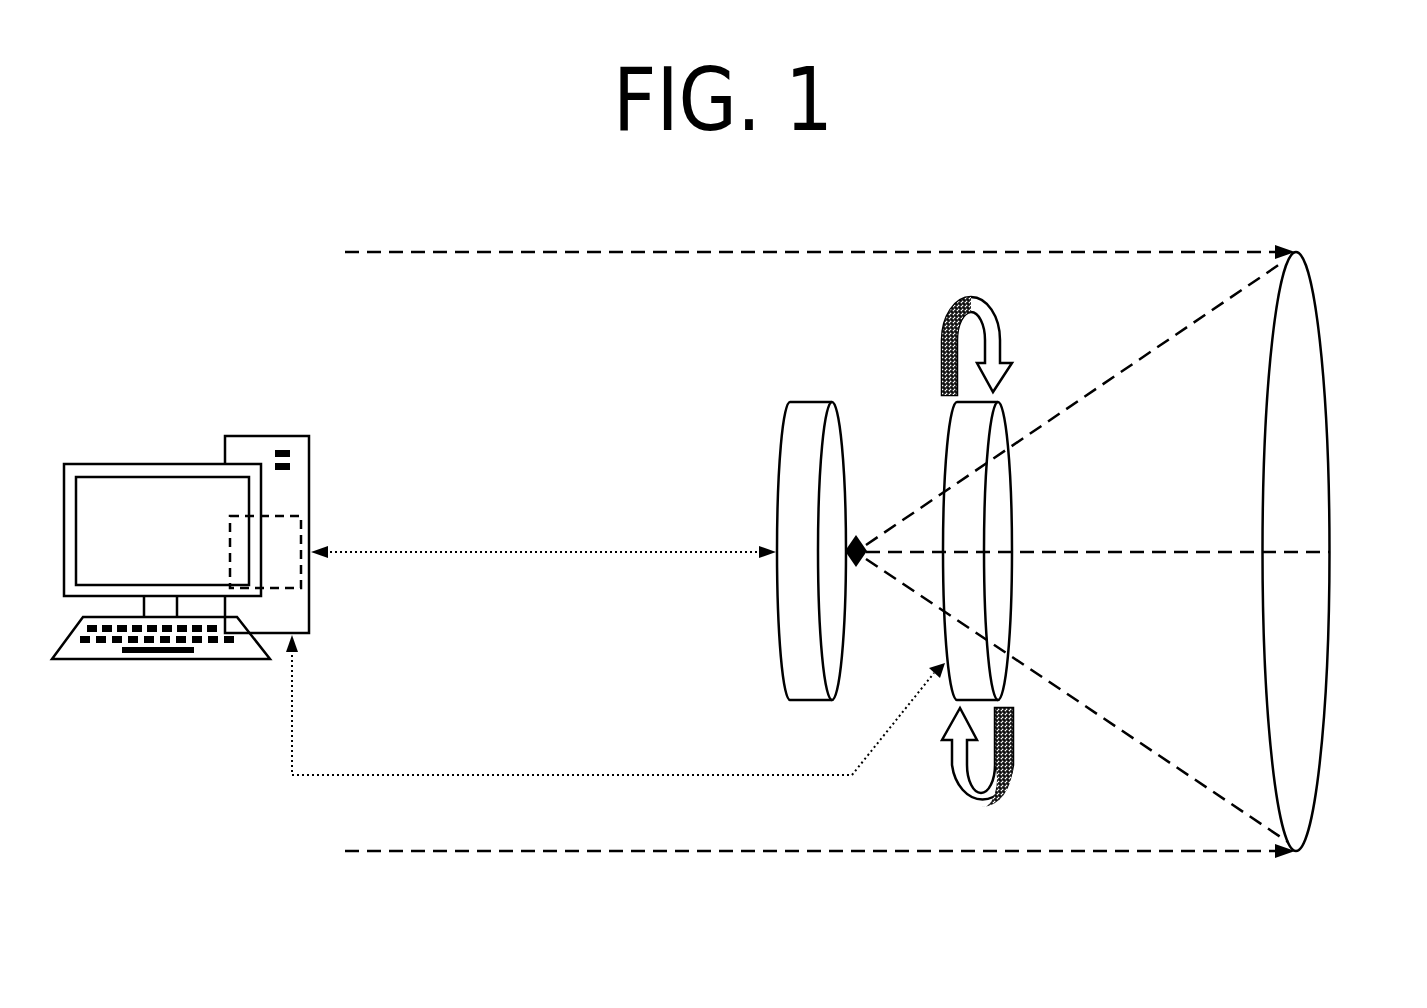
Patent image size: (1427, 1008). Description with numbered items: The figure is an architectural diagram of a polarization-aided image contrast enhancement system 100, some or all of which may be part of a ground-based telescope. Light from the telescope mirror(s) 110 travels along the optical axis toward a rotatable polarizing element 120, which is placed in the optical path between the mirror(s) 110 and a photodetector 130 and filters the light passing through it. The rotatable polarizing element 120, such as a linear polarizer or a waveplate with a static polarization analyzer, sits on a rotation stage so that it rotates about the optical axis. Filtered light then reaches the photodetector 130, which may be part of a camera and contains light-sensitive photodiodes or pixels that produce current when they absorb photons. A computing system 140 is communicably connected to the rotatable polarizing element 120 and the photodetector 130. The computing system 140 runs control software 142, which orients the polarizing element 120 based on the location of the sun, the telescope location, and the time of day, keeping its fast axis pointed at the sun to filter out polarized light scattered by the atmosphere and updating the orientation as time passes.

The polarization-aided image contrast enhancement system 100 is at (160, 178).
The telescope mirror(s) 110 is at (1322, 323).
The rotatable polarizing element 120 is at (943, 453).
The photodetector 130 is at (777, 632).
The computing system 140 is at (310, 497).
The control software 142 is at (302, 572).